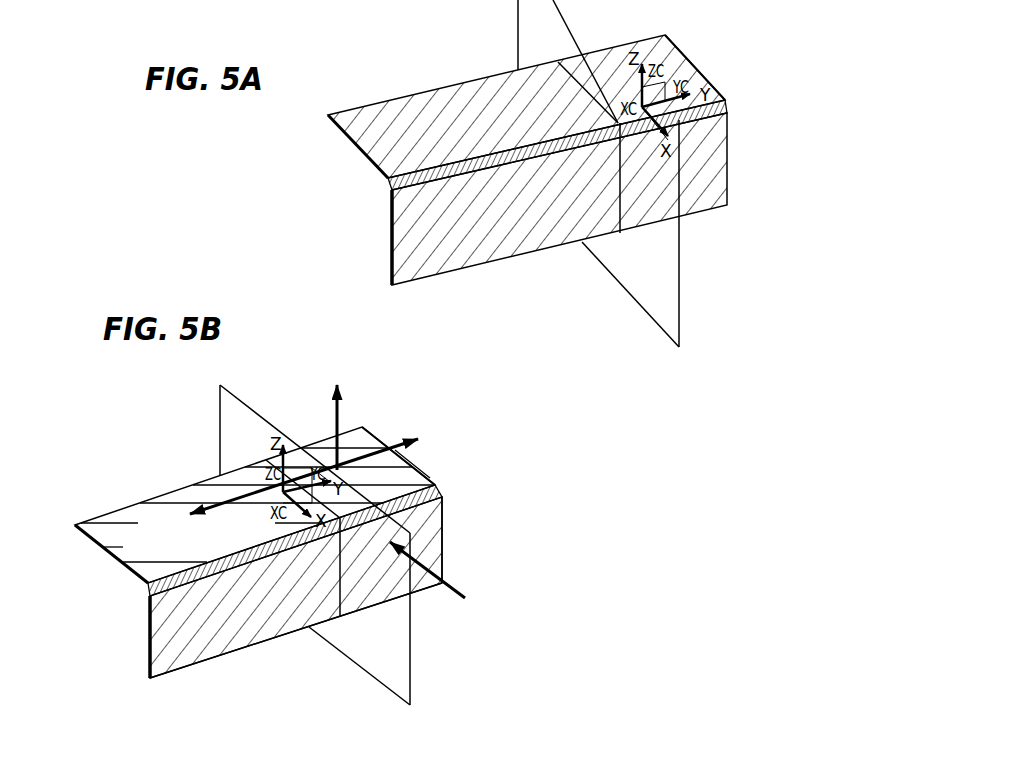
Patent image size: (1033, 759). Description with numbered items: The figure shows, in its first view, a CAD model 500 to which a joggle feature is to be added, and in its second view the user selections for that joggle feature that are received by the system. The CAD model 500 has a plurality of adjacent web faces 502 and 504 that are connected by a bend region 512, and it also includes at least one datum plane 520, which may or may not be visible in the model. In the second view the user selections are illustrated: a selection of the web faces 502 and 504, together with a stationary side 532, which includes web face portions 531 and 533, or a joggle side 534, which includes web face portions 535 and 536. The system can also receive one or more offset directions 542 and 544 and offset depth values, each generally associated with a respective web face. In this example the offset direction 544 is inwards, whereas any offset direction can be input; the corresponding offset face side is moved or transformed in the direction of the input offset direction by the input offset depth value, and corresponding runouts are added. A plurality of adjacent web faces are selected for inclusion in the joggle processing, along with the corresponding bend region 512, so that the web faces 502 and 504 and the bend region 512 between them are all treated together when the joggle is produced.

In FIG. 5A, the CAD model 500 is at (426, 57).
In FIG. 5B, the CAD model 500 is at (107, 440).
In FIG. 5A, the web face 502 is at (368, 115).
In FIG. 5B, the web face 502 is at (92, 530).
In FIG. 5A, the web face 504 is at (412, 277).
In FIG. 5B, the web face 504 is at (151, 612).
In FIG. 5A, the bend region 512 is at (392, 188).
In FIG. 5A, the datum plane 520 is at (652, 298).
In FIG. 5B, the web face portion 531 is at (177, 502).
In FIG. 5B, the stationary side 532 is at (230, 507).
In FIG. 5B, the web face portion 533 is at (165, 667).
In FIG. 5B, the joggle side 534 is at (335, 460).
In FIG. 5B, the web face portion 535 is at (417, 479).
In FIG. 5B, the web face portion 536 is at (436, 520).
In FIG. 5B, the offset direction 542 is at (340, 418).
In FIG. 5B, the offset direction 544 is at (452, 583).